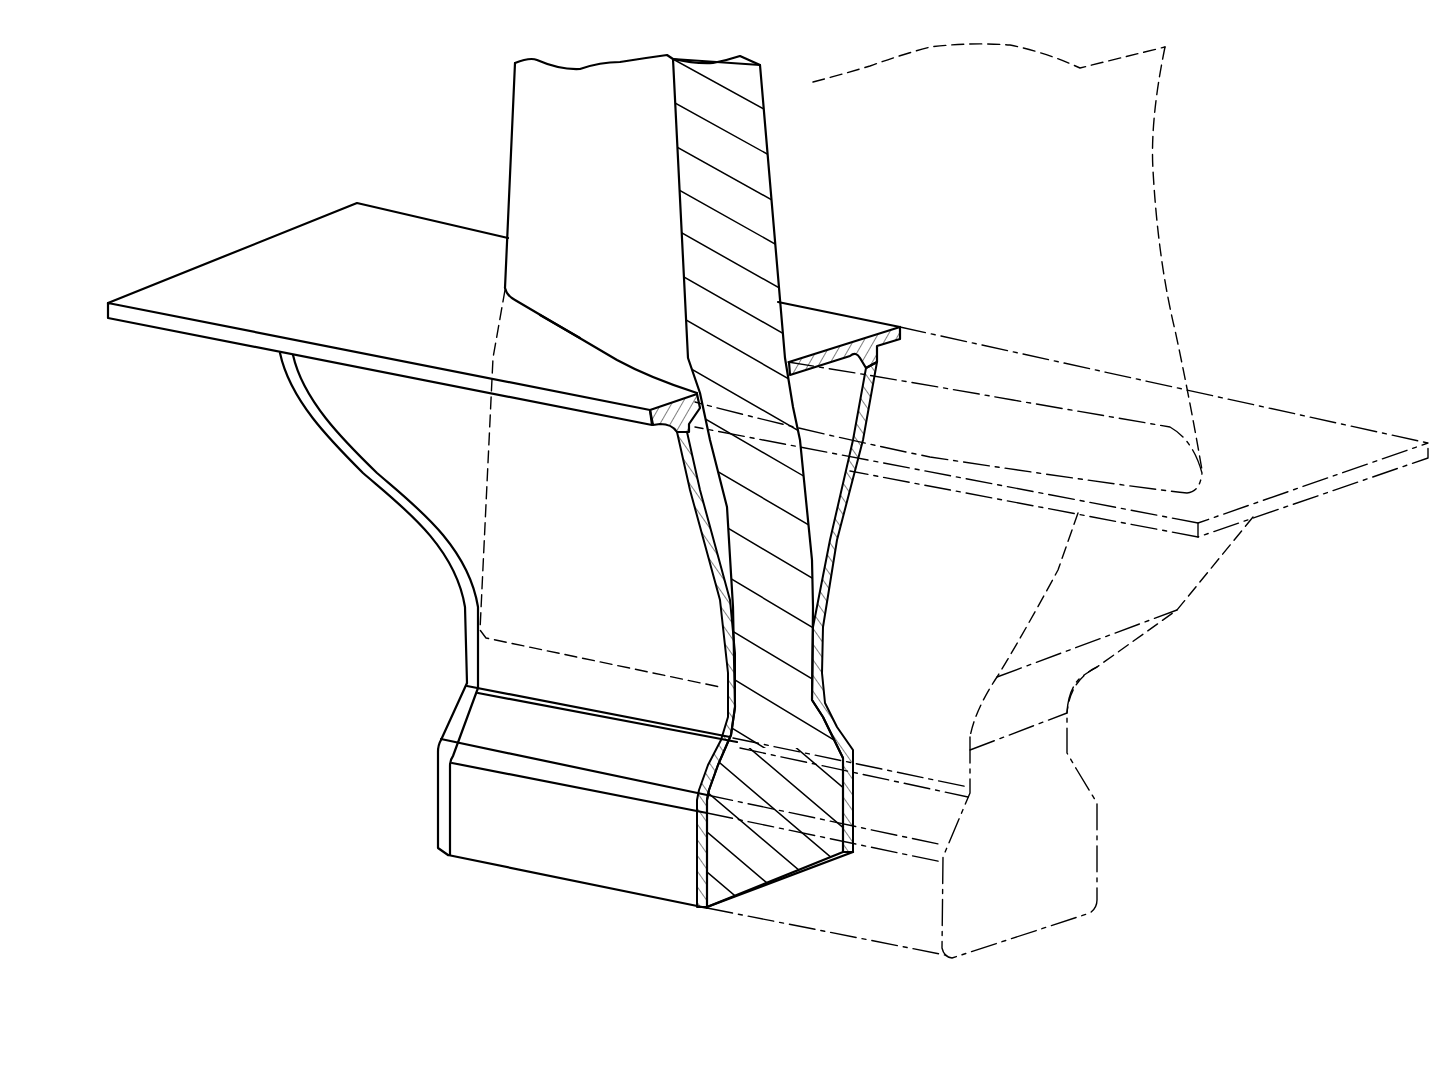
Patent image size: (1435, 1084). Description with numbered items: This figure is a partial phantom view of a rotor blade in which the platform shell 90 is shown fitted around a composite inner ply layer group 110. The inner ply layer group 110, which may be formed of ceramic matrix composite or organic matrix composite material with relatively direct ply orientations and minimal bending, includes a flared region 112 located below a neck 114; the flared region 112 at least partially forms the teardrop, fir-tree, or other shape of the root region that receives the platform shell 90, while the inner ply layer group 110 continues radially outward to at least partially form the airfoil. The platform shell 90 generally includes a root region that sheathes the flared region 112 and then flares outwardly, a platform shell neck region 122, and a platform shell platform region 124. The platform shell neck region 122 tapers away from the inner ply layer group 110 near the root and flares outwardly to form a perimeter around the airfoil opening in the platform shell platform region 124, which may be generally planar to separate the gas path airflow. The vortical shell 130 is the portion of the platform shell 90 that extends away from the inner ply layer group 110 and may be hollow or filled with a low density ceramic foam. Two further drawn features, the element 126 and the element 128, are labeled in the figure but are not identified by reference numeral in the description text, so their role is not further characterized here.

The platform shell 90 is at (345, 160).
The inner ply layer group 110 is at (804, 211).
The flared region 112 is at (770, 842).
The neck 114 is at (783, 597).
The platform shell neck region 122 is at (467, 655).
The platform shell platform region 124 is at (430, 473).
The platform 126 is at (433, 295).
The fillet 128 is at (560, 326).
The vortical shell 130 is at (902, 407).